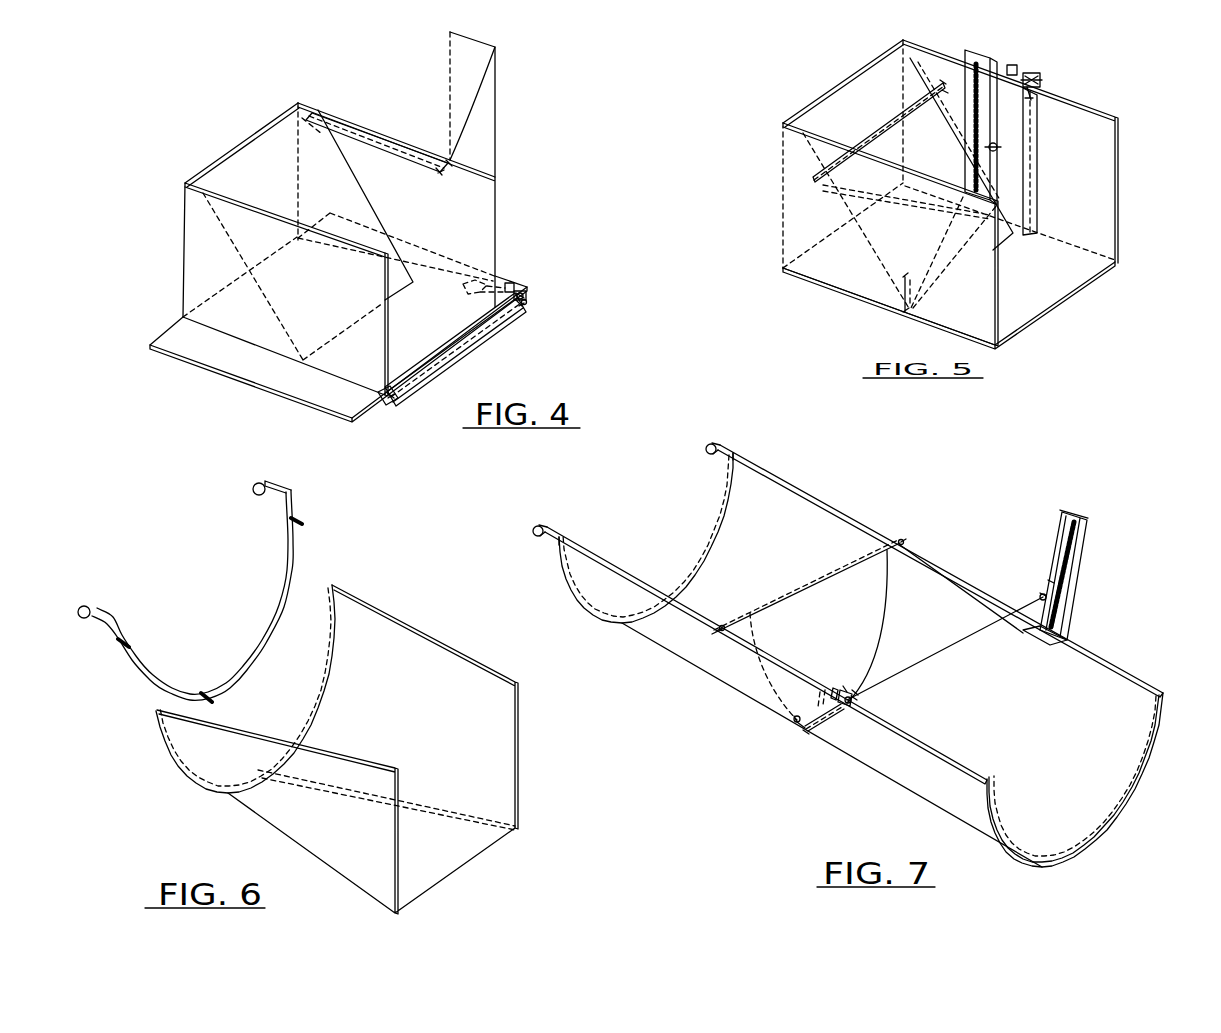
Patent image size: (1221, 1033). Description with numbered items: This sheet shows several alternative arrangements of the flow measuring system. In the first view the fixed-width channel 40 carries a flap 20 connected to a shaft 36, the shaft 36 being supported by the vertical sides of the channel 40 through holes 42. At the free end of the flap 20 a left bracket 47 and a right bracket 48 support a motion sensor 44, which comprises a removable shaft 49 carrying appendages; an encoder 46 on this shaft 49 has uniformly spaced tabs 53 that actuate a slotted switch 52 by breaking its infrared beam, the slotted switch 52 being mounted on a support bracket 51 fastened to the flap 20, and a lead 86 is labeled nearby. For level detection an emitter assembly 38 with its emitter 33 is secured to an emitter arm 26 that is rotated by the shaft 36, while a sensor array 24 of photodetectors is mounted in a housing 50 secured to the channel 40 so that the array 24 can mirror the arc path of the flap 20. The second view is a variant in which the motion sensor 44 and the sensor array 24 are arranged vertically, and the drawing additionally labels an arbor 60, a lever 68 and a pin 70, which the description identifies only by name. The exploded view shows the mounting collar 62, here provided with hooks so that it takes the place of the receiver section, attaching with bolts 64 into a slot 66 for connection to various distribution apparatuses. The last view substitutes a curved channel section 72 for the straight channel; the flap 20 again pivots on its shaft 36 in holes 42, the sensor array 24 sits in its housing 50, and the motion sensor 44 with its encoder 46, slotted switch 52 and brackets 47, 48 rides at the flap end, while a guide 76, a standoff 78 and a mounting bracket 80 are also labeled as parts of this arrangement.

In FIG. 4, the flap 20 is at (253, 173).
In FIG. 5, the flap 20 is at (857, 112).
In FIG. 7, the flap 20 is at (867, 610).
In FIG. 4, the sensor array 24 is at (477, 118).
In FIG. 5, the sensor array 24 is at (966, 58).
In FIG. 7, the sensor array 24 is at (1070, 584).
In FIG. 4, the emitter arm 26 is at (360, 131).
In FIG. 4, the emitter 33 is at (437, 172).
In FIG. 7, the emitter 33 is at (1050, 579).
In FIG. 4, the shaft 36 is at (270, 148).
In FIG. 7, the shaft 36 is at (831, 580).
In FIG. 4, the emitter assembly 38 is at (447, 168).
In FIG. 7, the emitter assembly 38 is at (1040, 594).
In FIG. 4, the channel 40 is at (207, 250).
In FIG. 5, the channel 40 is at (800, 203).
In FIG. 6, the channel 40 is at (518, 789).
In FIG. 7, the hole 42 is at (900, 541).
In FIG. 4, the motion sensor 44 is at (476, 349).
In FIG. 5, the motion sensor 44 is at (1037, 165).
In FIG. 7, the motion sensor 44 is at (835, 728).
In FIG. 4, the encoder 46 is at (528, 297).
In FIG. 5, the encoder 46 is at (1042, 82).
In FIG. 7, the encoder 46 is at (855, 701).
In FIG. 4, the left bracket 47 is at (380, 402).
In FIG. 7, the left bracket 47 is at (796, 727).
In FIG. 4, the right bracket 48 is at (522, 306).
In FIG. 7, the right bracket 48 is at (845, 687).
In FIG. 4, the shaft 49 is at (392, 401).
In FIG. 5, the shaft 49 is at (1032, 88).
In FIG. 7, the shaft 49 is at (805, 732).
In FIG. 4, the housing 50 is at (451, 57).
In FIG. 7, the housing 50 is at (1086, 531).
In FIG. 4, the support bracket 51 is at (509, 283).
In FIG. 5, the support bracket 51 is at (1012, 65).
In FIG. 7, the support bracket 51 is at (836, 688).
In FIG. 4, the slotted switch 52 is at (526, 292).
In FIG. 5, the slotted switch 52 is at (1031, 74).
In FIG. 7, the slotted switch 52 is at (853, 692).
In FIG. 4, the tab 53 is at (528, 304).
In FIG. 5, the arbor 60 is at (815, 177).
In FIG. 6, the collar 62 is at (287, 553).
In FIG. 7, the collar 62 is at (733, 491).
In FIG. 6, the bolt 64 is at (301, 521).
In FIG. 6, the slot 66 is at (331, 610).
In FIG. 5, the lever 68 is at (947, 237).
In FIG. 7, the lever 68 is at (1040, 598).
In FIG. 5, the pin 70 is at (903, 299).
In FIG. 7, the pin 70 is at (815, 700).
In FIG. 7, the curved channel section 72 is at (905, 759).
In FIG. 7, the guide 76 is at (1058, 542).
In FIG. 7, the standoff 78 is at (1064, 513).
In FIG. 7, the mounting bracket 80 is at (1052, 645).
In FIG. 4, the lead 86 is at (517, 287).